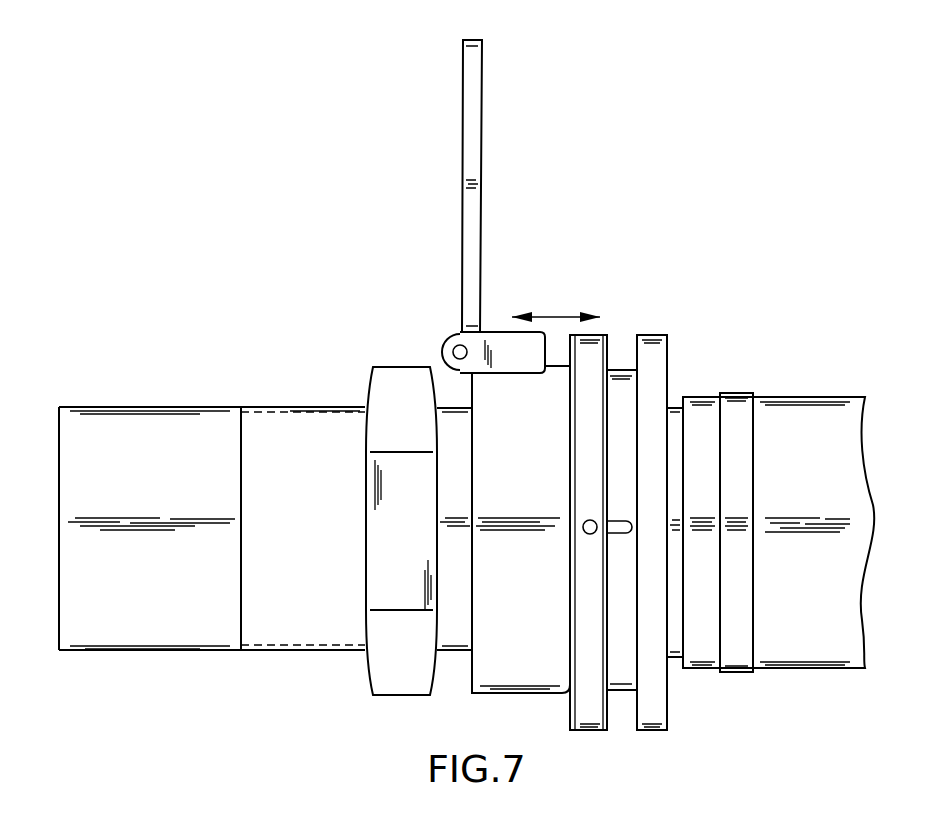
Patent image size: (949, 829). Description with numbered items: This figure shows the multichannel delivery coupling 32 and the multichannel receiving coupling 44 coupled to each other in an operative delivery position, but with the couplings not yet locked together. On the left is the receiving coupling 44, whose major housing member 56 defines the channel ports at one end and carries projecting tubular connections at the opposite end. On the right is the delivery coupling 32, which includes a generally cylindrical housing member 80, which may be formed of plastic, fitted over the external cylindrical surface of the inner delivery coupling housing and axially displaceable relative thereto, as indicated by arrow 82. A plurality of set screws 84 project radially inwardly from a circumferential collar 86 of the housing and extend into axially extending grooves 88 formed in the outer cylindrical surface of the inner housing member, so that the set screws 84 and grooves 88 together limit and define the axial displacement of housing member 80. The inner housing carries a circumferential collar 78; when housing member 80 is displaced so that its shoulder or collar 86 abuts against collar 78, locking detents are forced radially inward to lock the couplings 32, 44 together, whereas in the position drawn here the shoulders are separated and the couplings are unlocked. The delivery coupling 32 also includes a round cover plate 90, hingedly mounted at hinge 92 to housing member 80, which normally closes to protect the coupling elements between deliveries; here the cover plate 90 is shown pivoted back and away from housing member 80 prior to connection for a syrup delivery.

The multichannel delivery coupling 32 is at (713, 275).
The multichannel receiving coupling 44 is at (287, 337).
The major housing member 56 is at (178, 650).
The circumferential collar 78 is at (650, 730).
The cylindrical housing member 80 is at (520, 695).
The arrow 82 is at (562, 317).
The set screws 84 is at (597, 533).
The circumferential collar 86 is at (583, 730).
The axially extending grooves 88 is at (632, 522).
The round cover plate 90 is at (484, 108).
The hinge 92 is at (457, 347).